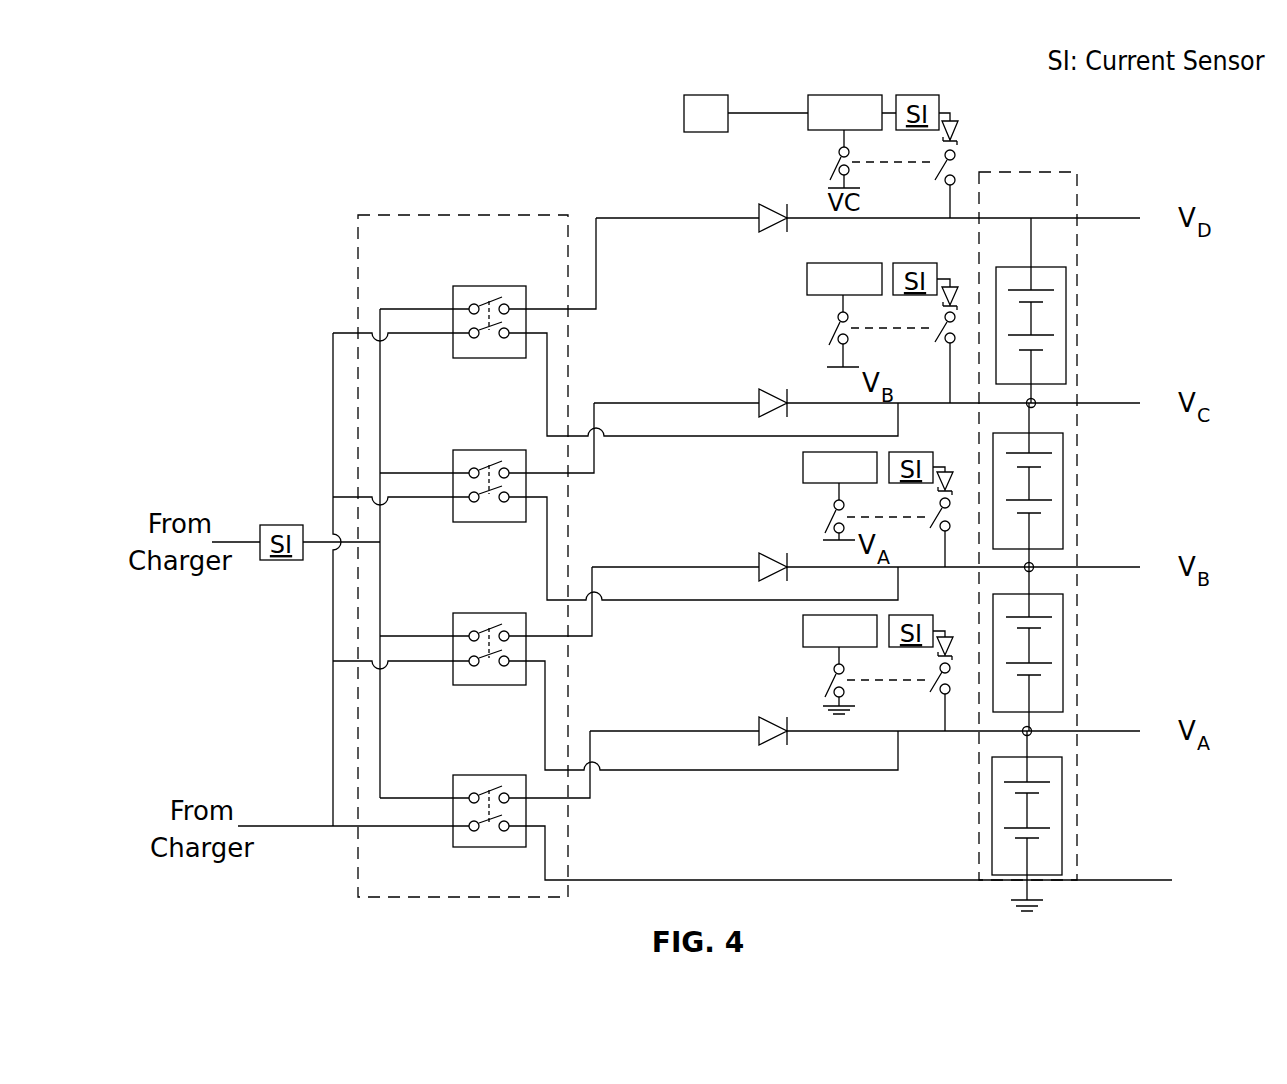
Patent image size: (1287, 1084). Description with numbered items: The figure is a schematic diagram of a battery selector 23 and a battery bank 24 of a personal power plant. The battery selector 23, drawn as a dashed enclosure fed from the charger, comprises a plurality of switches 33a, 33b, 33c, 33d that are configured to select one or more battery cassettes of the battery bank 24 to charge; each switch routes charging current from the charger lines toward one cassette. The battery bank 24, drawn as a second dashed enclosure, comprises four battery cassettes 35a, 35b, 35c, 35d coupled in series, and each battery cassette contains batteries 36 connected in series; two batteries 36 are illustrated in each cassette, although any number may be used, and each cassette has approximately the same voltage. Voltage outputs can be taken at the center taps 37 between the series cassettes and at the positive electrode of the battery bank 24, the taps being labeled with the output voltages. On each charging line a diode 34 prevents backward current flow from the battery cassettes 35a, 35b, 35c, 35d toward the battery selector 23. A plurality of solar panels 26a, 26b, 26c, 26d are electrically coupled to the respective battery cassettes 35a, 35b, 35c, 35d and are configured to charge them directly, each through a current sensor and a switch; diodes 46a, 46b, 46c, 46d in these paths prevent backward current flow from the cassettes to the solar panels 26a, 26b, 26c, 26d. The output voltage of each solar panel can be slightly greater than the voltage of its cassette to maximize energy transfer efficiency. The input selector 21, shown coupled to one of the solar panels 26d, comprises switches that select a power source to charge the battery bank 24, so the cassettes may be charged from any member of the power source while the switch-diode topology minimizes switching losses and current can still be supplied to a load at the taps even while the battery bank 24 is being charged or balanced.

The input selector 21 is at (706, 113).
The battery selector 23 is at (402, 214).
The battery bank 24 is at (1020, 172).
The solar panel 26a is at (840, 664).
The solar panel 26b is at (840, 496).
The solar panel 26c is at (844, 315).
The solar panel 26d is at (845, 141).
The switch 33a is at (478, 775).
The switch 33b is at (478, 613).
The switch 33c is at (478, 450).
The switch 33d is at (478, 286).
The diode 34 is at (772, 723).
The battery cassette 35a is at (1063, 815).
The battery cassette 35b is at (1064, 610).
The battery cassette 35c is at (1064, 449).
The battery cassette 35d is at (1067, 283).
The battery 36 is at (1048, 343).
The center tap 37 is at (1036, 403).
The diode 46a is at (950, 645).
The diode 46b is at (950, 480).
The diode 46c is at (950, 292).
The diode 46d is at (957, 125).